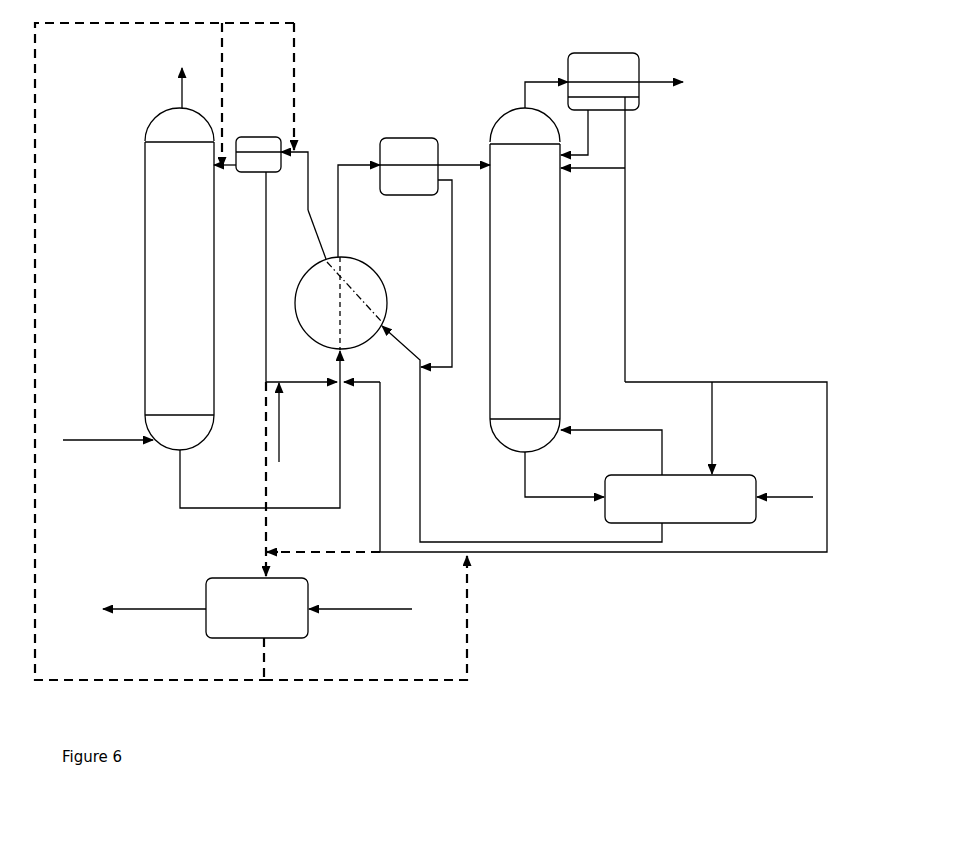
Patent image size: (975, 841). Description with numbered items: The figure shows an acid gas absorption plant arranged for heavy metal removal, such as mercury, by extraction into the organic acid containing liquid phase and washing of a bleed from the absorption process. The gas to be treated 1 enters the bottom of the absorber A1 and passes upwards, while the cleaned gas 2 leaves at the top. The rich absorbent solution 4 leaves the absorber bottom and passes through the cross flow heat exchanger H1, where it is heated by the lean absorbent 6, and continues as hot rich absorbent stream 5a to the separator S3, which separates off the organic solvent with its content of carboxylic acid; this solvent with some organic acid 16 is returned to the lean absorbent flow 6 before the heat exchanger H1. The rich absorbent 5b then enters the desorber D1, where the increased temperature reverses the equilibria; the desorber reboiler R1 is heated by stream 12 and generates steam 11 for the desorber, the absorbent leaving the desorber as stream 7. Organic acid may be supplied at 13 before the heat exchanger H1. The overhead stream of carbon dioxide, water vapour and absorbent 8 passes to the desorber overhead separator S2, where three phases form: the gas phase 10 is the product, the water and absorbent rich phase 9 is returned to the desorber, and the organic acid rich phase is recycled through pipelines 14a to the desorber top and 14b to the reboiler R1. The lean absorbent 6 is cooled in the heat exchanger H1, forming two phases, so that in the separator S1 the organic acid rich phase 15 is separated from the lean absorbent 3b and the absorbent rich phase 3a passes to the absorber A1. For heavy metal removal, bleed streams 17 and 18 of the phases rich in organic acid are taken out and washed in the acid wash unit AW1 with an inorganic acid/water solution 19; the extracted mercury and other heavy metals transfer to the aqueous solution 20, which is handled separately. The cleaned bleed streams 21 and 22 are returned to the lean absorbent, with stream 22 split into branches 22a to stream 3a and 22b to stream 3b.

The gas to be treated 1 is at (452, 467).
The cleaned gas 2 is at (189, 88).
The absorbent rich phase 3a is at (227, 178).
The lean absorbent stream 3b is at (331, 236).
The rich absorbent solution 4 is at (280, 451).
The hot rich absorbent stream 5a is at (359, 202).
The rich absorbent stream to desorber 5b is at (464, 156).
The lean absorbent 6 is at (522, 434).
The absorbent stream from desorber 7 is at (553, 474).
The water vapour with CO2 8 is at (546, 85).
The water and absorbent rich phase 9 is at (574, 132).
The gas phase product 10 is at (661, 68).
The steam 11 is at (611, 443).
The reactor feed stream 12 is at (785, 487).
The organic acid supply 13 is at (290, 422).
The organic acid recycle pipeline 14a is at (593, 239).
The organic acid recycle pipeline 14b is at (728, 428).
The organic acid rich phase 15 is at (254, 277).
The organic solvent return pipe 16 is at (447, 273).
The bleed stream 17 is at (253, 479).
The bleed stream 18 is at (323, 543).
The inorganic acid/water solution 19 is at (360, 599).
The aqueous solution with heavy metals 20 is at (154, 599).
The cleaned bleed stream 21 is at (365, 618).
The cleaned bleed stream 22 is at (164, 351).
The cleaned bleed stream branch 22a is at (239, 95).
The cleaned bleed stream branch 22b is at (311, 86).
The absorber A1 is at (179, 279).
The desorber D1 is at (525, 280).
The cross flow heat exchanger H1 is at (341, 303).
The separator S1 is at (258, 154).
The desorber overhead separator S2 is at (603, 81).
The separator for organic solvent S3 is at (409, 166).
The desorber reboiler R1 is at (680, 499).
The acid wash unit AW1 is at (257, 608).